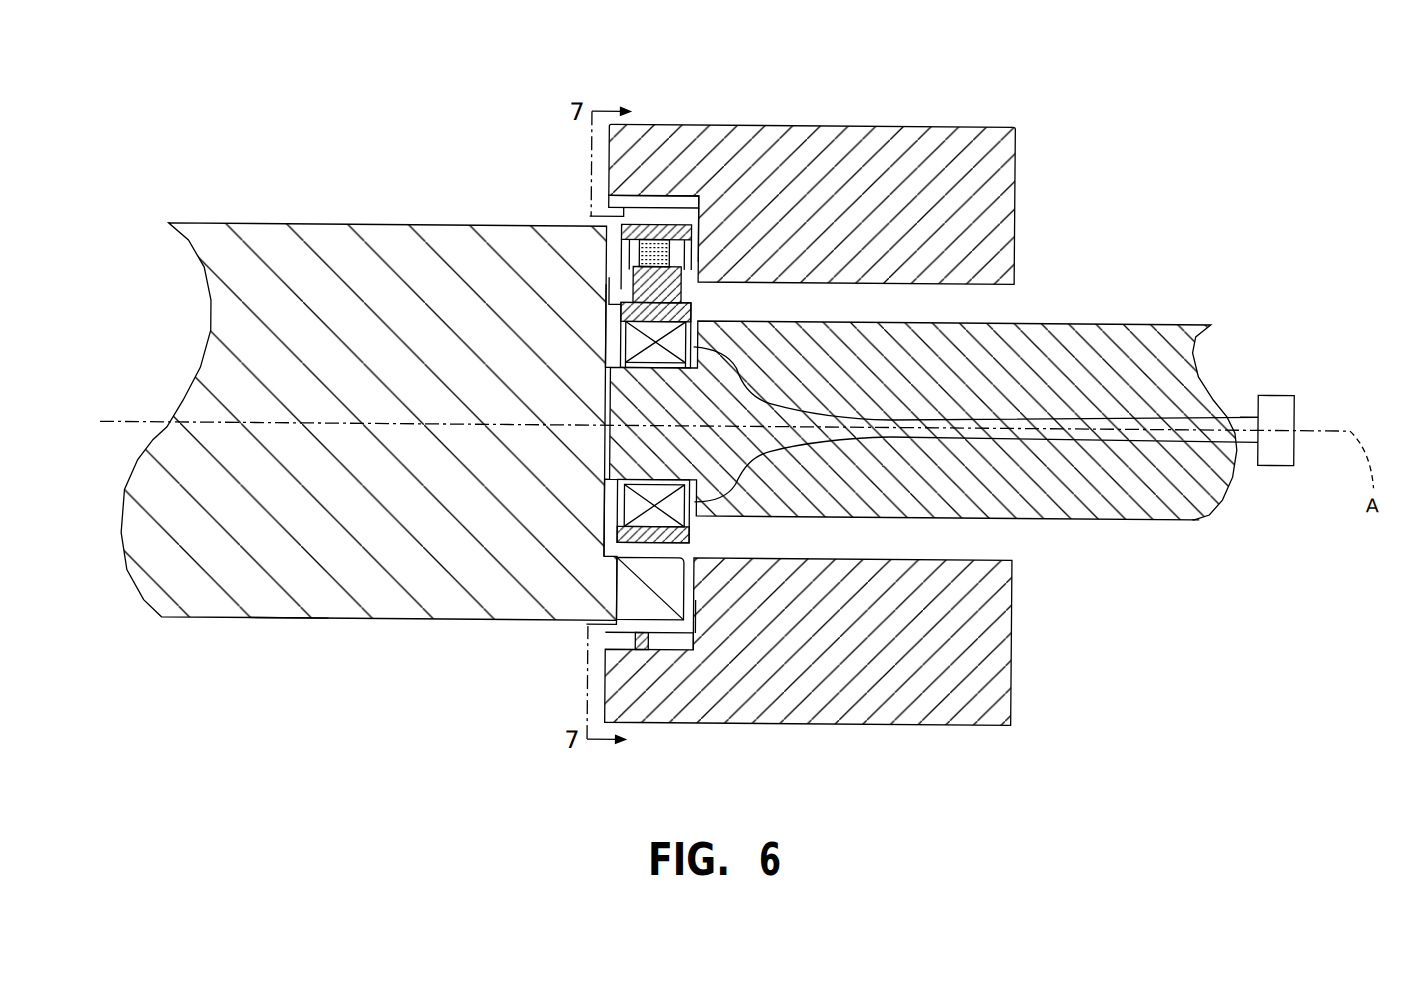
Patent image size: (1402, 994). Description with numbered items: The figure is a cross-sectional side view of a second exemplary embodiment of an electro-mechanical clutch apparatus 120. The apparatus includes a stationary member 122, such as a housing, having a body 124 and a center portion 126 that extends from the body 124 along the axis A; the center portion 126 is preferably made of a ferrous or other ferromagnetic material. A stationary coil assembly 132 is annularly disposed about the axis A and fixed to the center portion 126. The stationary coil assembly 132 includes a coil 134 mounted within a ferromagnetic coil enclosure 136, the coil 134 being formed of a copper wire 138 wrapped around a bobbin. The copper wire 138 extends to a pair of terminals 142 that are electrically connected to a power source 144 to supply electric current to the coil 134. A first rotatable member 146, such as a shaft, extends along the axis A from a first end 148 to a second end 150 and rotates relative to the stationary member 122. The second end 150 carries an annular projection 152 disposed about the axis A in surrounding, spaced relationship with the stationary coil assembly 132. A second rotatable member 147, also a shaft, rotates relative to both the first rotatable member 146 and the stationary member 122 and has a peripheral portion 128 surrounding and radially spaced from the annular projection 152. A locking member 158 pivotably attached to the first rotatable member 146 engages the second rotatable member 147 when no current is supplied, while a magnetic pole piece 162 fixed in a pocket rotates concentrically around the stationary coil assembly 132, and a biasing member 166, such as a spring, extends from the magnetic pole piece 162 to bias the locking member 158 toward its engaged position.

The electro-mechanical clutch apparatus 120 is at (1251, 260).
The stationary member 122 is at (1194, 516).
The body 124 is at (1104, 516).
The center portion 126 is at (603, 385).
The peripheral portion 128 is at (598, 150).
The stationary coil assembly 132 is at (617, 513).
The coil 134 is at (695, 347).
The coil enclosure 136 is at (697, 301).
The copper wire 138 is at (1087, 414).
The terminals 142 is at (1242, 413).
The power source 144 is at (1277, 391).
The first rotatable member 146 is at (292, 621).
The second rotatable member 147 is at (977, 125).
The first end 148 is at (210, 316).
The second end 150 is at (698, 264).
The annular projection 152 is at (657, 582).
The locking member 158 is at (640, 230).
The magnetic pole piece 162 is at (616, 268).
The biasing member 166 is at (655, 245).